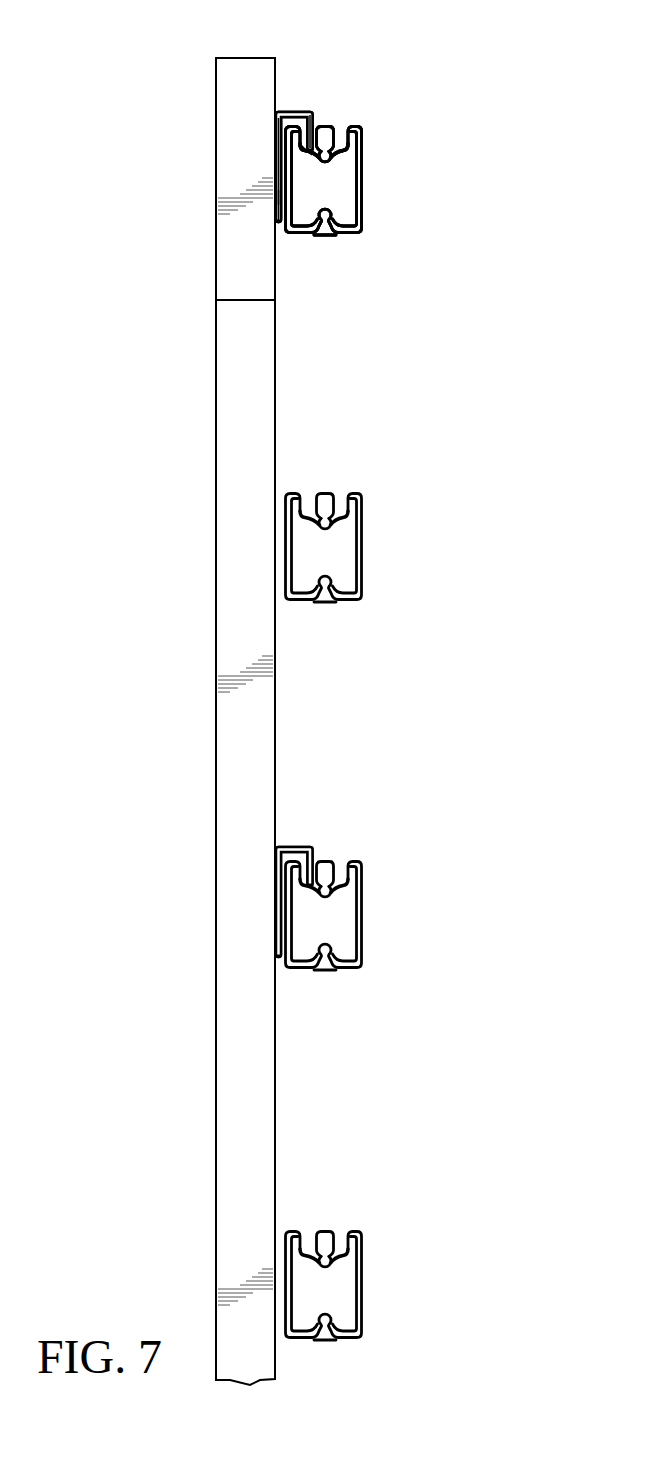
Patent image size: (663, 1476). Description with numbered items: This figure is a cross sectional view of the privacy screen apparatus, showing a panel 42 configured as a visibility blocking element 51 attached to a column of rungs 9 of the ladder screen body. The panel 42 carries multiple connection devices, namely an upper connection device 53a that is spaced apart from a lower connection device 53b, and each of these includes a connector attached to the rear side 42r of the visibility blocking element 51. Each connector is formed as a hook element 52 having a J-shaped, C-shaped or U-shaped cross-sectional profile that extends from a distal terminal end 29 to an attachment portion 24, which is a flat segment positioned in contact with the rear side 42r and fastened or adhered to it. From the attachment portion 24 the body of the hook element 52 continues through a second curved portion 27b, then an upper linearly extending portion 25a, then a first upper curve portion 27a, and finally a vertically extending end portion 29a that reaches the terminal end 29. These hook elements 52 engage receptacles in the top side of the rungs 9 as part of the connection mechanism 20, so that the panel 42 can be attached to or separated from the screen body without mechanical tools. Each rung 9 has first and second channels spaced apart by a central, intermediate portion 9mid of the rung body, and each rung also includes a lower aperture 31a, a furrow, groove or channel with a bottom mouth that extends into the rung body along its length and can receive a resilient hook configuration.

The rung 9 is at (365, 155).
The central, intermediate portion 9mid is at (320, 1230).
The connection mechanism 20 is at (353, 100).
The attachment portion 24 is at (277, 197).
The upper linearly extending portion 25a is at (289, 111).
The first upper curve portion 27a is at (309, 111).
The second curved portion 27b is at (277, 126).
The terminal end 29 is at (316, 126).
The end portion 29a is at (316, 143).
The lower aperture 31a is at (313, 603).
The panel 42 is at (243, 300).
The rear side 42r is at (276, 403).
The visibility blocking element 51 is at (183, 70).
The hook element 52 is at (430, 78).
The upper connection device 53a is at (300, 262).
The lower connection device 53b is at (335, 830).